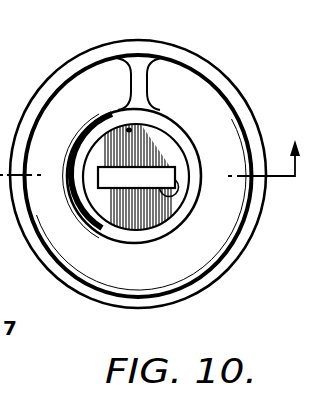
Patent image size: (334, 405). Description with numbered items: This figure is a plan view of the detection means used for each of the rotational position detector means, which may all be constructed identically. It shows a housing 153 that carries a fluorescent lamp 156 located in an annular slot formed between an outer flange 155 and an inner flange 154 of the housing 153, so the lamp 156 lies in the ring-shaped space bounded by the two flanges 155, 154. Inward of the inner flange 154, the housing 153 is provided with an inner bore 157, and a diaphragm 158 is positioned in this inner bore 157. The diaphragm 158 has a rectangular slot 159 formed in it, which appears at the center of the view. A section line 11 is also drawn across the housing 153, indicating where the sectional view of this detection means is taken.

The housing 153 is at (206, 50).
The inner flange 154 is at (193, 137).
The outer flange 155 is at (150, 53).
The fluorescent lamp 156 is at (210, 101).
The inner bore 157 is at (113, 128).
The diaphragm 158 is at (125, 210).
The rectangular slot 159 is at (178, 196).
The section line 11 is at (152, 172).